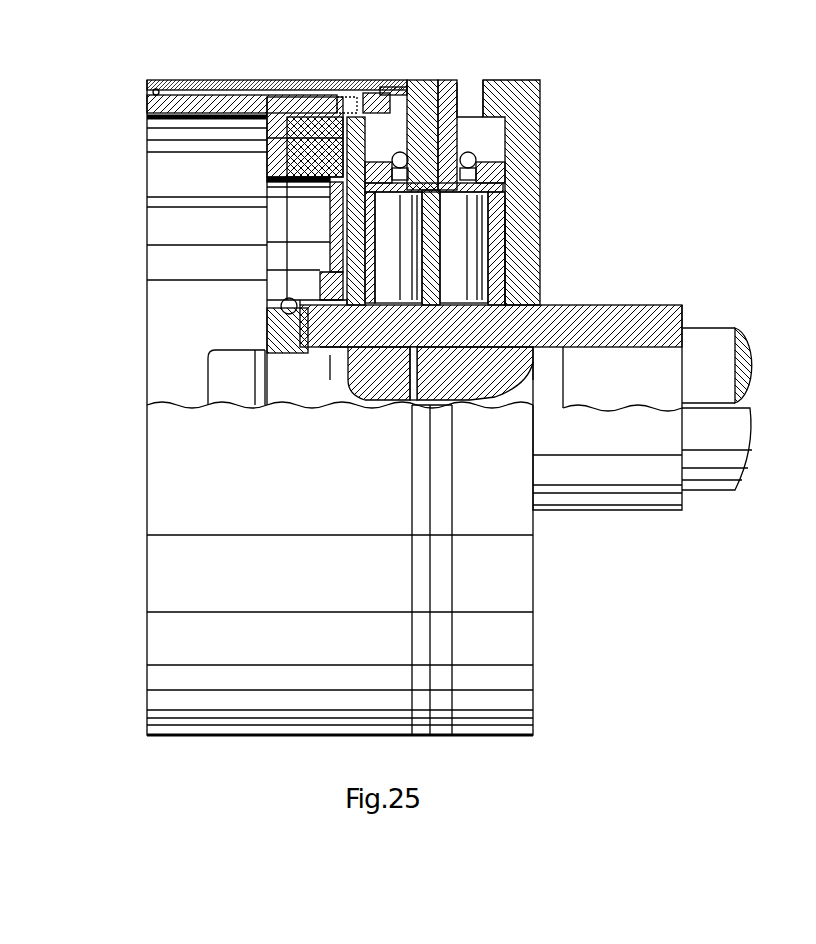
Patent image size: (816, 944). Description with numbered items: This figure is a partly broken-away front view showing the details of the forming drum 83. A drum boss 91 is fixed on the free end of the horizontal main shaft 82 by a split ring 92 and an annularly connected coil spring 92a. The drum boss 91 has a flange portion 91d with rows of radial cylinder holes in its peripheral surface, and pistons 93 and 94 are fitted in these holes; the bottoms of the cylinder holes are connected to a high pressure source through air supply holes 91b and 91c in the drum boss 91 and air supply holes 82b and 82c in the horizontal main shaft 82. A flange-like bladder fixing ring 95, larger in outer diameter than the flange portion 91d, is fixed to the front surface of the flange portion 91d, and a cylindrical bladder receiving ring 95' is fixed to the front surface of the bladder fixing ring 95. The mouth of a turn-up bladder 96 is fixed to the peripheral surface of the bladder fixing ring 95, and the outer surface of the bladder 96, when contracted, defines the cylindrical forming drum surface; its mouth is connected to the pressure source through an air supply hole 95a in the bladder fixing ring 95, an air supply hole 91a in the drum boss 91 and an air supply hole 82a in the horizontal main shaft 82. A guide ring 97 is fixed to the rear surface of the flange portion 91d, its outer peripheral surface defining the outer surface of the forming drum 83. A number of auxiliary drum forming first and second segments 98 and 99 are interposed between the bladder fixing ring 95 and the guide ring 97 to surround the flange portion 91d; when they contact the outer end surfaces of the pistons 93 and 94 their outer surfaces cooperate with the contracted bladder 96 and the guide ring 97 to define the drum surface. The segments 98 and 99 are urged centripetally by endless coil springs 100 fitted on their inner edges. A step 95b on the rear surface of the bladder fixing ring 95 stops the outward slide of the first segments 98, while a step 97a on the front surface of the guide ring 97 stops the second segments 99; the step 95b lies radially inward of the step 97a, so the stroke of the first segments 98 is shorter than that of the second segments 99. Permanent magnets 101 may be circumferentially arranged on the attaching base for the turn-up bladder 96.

The horizontal main shaft 82 is at (722, 330).
The air supply hole 82a is at (340, 368).
The air supply hole 82b is at (470, 413).
The air supply hole 82c is at (530, 377).
The forming drum 83 is at (127, 537).
The drum boss 91 is at (655, 310).
The air supply hole 91a is at (342, 323).
The air supply hole 91b is at (492, 275).
The air supply hole 91c is at (477, 337).
The flange portion 91d is at (473, 263).
The split ring 92 is at (265, 332).
The annularly connected coil spring 92a is at (281, 303).
The piston 93 is at (407, 243).
The piston 94 is at (505, 247).
The bladder fixing ring 95 is at (211, 160).
The bladder receiving ring 95' is at (213, 142).
The air supply hole 95a is at (280, 245).
The step 95b is at (380, 96).
The turn-up bladder 96 is at (263, 82).
The guide ring 97 is at (543, 95).
The step 97a is at (505, 80).
The first segment 98 is at (420, 80).
The second segment 99 is at (450, 80).
The endless coil spring 100 is at (477, 153).
The permanent magnet 101 is at (343, 90).